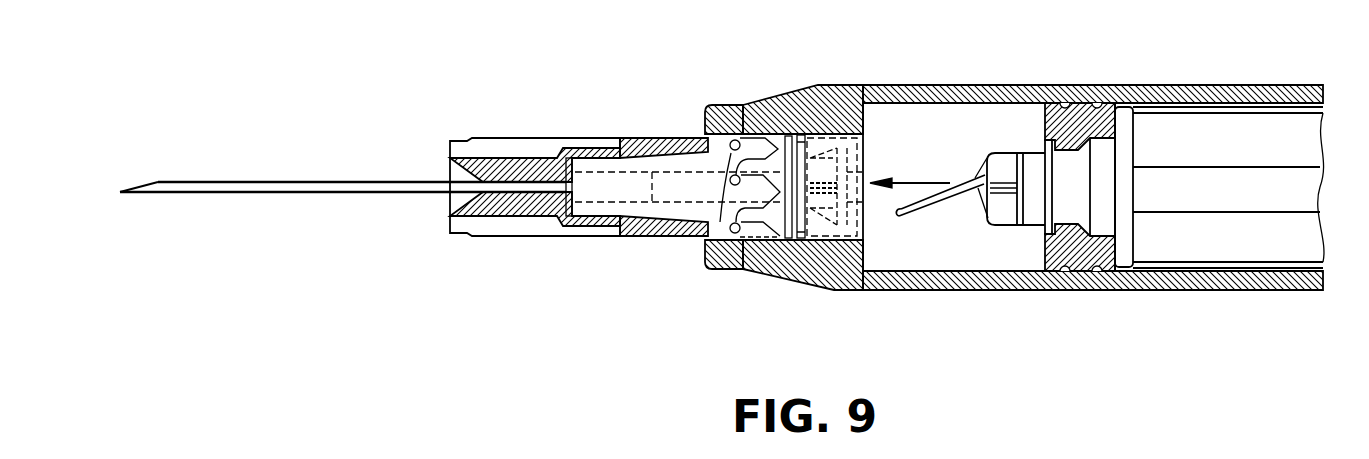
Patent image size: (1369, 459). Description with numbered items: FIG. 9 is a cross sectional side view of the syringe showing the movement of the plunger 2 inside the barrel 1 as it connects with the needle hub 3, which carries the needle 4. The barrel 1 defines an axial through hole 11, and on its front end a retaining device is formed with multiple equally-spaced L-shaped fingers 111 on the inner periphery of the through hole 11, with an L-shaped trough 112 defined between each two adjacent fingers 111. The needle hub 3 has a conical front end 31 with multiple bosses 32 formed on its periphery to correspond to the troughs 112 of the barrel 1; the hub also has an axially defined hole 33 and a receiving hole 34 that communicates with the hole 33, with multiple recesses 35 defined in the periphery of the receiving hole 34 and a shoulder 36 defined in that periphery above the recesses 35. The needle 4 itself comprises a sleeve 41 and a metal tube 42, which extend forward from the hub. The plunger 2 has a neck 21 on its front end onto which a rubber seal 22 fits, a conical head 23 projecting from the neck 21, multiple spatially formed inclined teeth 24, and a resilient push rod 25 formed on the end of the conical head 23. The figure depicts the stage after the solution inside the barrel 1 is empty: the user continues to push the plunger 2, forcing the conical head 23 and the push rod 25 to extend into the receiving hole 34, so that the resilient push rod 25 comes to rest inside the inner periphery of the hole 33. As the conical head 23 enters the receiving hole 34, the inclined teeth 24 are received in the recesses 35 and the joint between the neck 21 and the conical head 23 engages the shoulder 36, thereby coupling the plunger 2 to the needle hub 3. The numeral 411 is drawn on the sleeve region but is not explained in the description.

The barrel 1 is at (1133, 87).
The plunger 2 is at (1252, 248).
The needle hub 3 is at (826, 268).
The needle 4 is at (346, 181).
The through hole 11 is at (801, 135).
The neck 21 is at (1073, 208).
The rubber seal 22 is at (1108, 266).
The conical head 23 is at (1008, 205).
The inclined teeth 24 is at (1005, 153).
The resilient push rod 25 is at (918, 218).
The conical front end 31 is at (598, 216).
The bosses 32 is at (712, 270).
The axially defined hole 33 is at (628, 172).
The receiving hole 34 is at (855, 138).
The recesses 35 is at (822, 140).
The shoulder 36 is at (867, 172).
The sleeve 41 is at (496, 168).
The metal tube 42 is at (189, 190).
The fingers 111 is at (738, 232).
The troughs 112 is at (748, 135).
The hub shoulder 411 is at (593, 148).